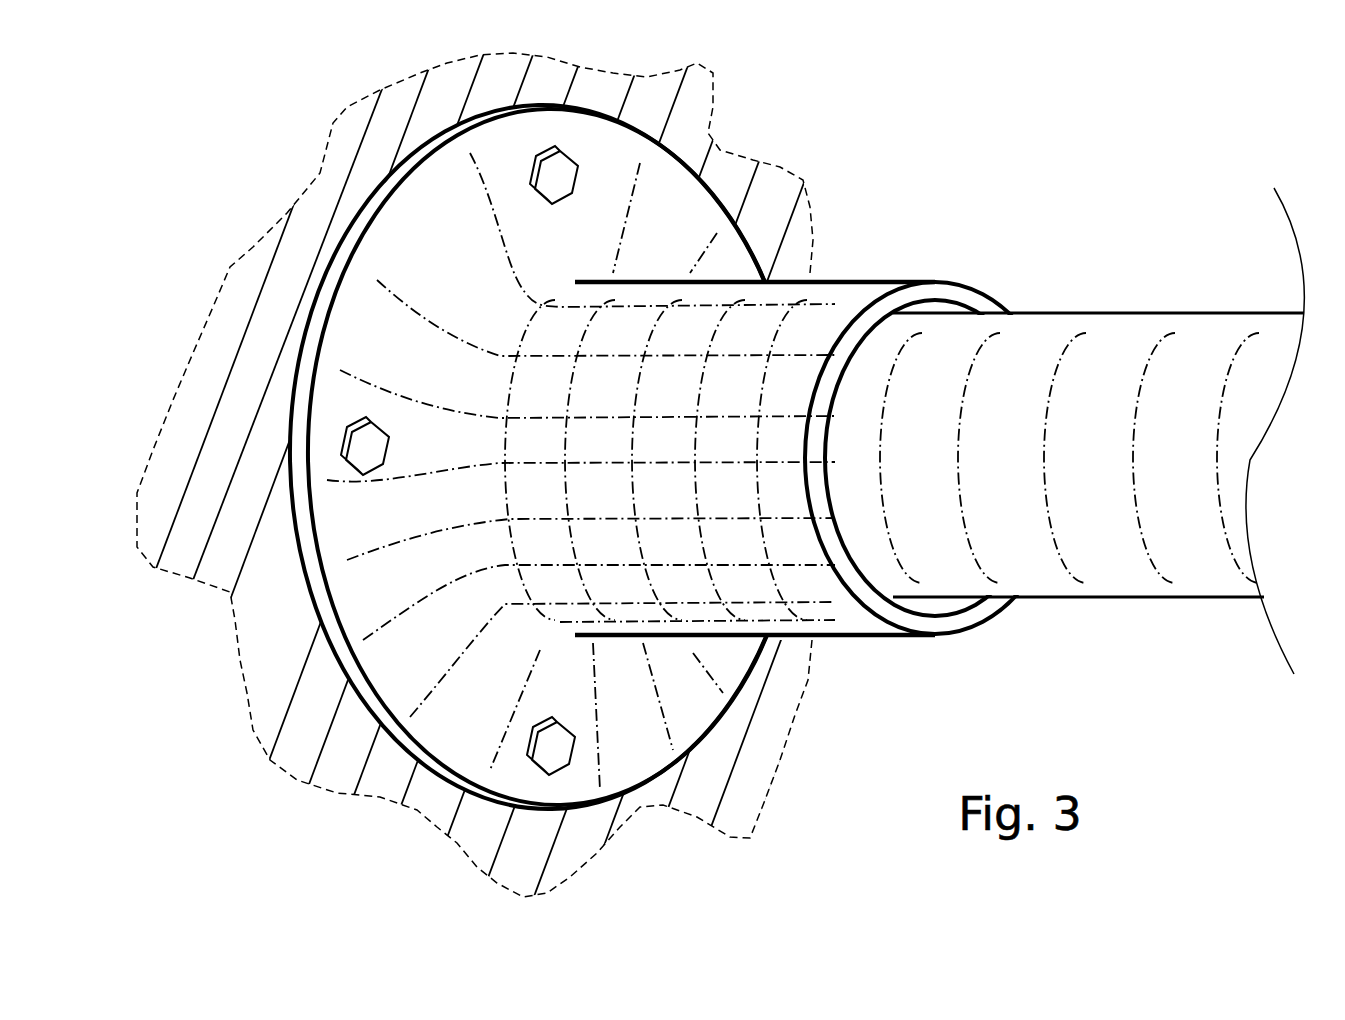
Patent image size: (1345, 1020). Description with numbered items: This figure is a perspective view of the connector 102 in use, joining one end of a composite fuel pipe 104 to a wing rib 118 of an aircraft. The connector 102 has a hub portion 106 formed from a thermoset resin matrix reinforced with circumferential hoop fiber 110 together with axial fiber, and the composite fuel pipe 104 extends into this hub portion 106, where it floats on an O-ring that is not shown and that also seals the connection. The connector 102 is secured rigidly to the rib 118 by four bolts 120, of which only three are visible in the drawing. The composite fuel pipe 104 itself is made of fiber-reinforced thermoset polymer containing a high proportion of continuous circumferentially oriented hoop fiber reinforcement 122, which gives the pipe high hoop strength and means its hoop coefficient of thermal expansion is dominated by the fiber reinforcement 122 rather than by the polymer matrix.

The connector 102 is at (850, 243).
The composite fuel pipe 104 is at (960, 427).
The hub portion 106 is at (696, 471).
The hoop fiber 110 is at (775, 545).
The wing rib 118 is at (207, 473).
The bolts 120 is at (560, 180).
The hoop fiber reinforcement 122 is at (967, 520).